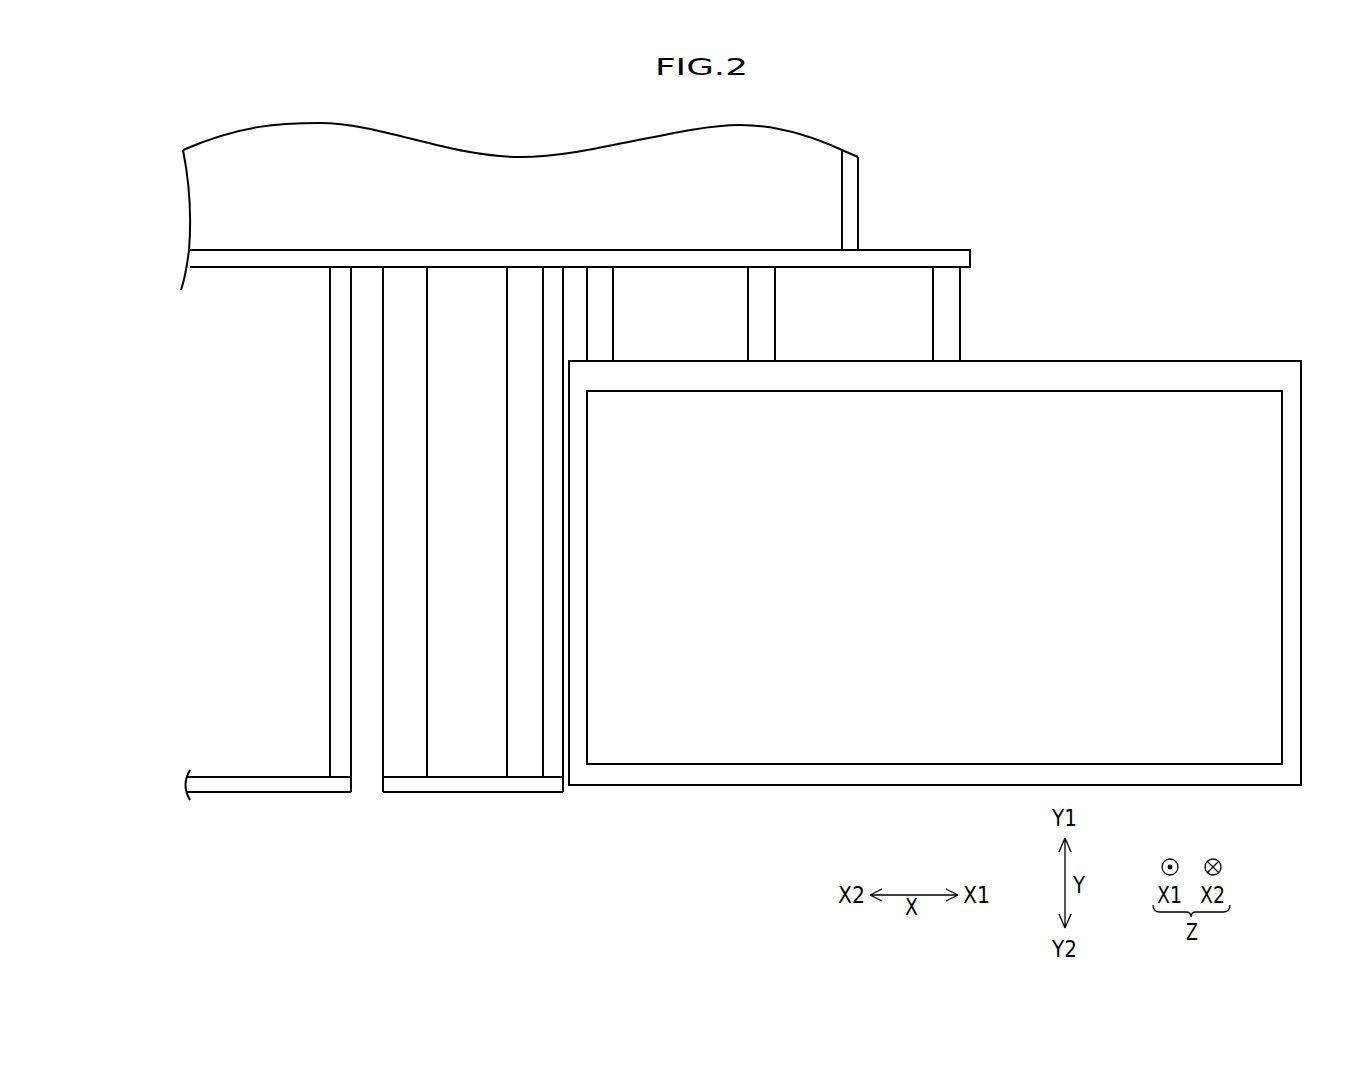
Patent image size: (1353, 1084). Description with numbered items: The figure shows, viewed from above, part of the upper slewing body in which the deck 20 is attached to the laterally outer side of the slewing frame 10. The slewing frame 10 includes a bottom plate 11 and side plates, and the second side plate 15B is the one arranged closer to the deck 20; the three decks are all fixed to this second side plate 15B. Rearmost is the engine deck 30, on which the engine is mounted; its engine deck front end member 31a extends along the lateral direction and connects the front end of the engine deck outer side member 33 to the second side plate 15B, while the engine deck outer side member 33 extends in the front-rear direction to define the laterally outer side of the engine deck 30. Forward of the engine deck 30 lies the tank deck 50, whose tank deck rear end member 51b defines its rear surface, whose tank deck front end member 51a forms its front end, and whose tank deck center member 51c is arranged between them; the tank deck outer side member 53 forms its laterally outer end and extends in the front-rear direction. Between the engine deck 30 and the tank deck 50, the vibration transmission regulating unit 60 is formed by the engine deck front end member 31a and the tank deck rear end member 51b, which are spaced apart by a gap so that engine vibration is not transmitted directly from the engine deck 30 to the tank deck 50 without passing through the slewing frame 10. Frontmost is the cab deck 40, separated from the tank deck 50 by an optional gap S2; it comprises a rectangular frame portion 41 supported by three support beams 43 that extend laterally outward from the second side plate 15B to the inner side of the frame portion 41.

The slewing frame 10 is at (1185, 169).
The deck 20 is at (1186, 250).
The bottom plate 11 is at (202, 217).
The second side plate 15B is at (198, 259).
The engine deck 30 is at (269, 572).
The engine deck front end member 31a is at (335, 493).
The engine deck outer side member 33 is at (217, 785).
The vibration transmission regulating unit 60 is at (372, 809).
The gap S2 is at (573, 809).
The tank deck 50 is at (473, 572).
The tank deck front end member 51a is at (552, 441).
The tank deck rear end member 51b is at (423, 642).
The tank deck center member 51c is at (528, 549).
The tank deck outer side member 53 is at (465, 789).
The cab deck 40 is at (935, 572).
The frame portion 41 is at (853, 773).
The support beams 43 is at (809, 314).